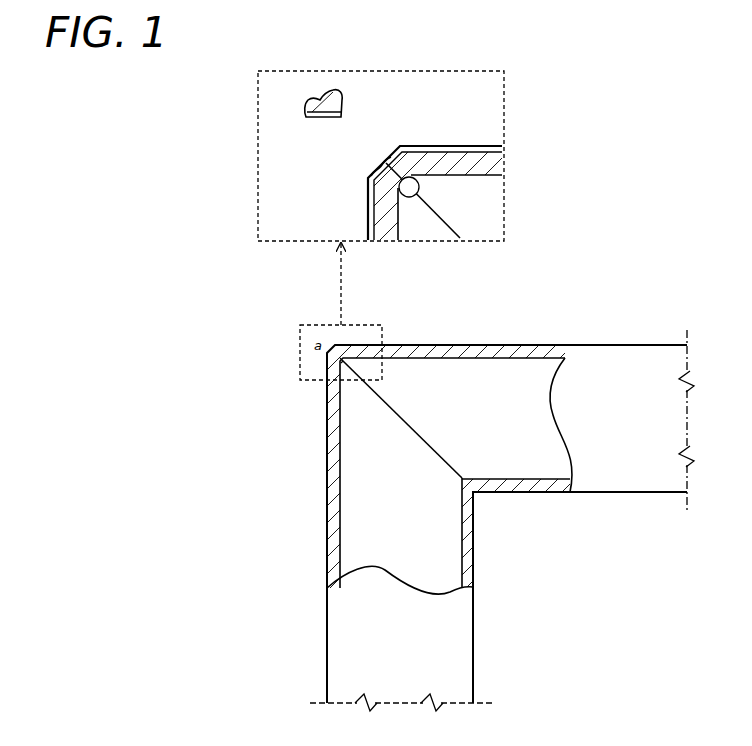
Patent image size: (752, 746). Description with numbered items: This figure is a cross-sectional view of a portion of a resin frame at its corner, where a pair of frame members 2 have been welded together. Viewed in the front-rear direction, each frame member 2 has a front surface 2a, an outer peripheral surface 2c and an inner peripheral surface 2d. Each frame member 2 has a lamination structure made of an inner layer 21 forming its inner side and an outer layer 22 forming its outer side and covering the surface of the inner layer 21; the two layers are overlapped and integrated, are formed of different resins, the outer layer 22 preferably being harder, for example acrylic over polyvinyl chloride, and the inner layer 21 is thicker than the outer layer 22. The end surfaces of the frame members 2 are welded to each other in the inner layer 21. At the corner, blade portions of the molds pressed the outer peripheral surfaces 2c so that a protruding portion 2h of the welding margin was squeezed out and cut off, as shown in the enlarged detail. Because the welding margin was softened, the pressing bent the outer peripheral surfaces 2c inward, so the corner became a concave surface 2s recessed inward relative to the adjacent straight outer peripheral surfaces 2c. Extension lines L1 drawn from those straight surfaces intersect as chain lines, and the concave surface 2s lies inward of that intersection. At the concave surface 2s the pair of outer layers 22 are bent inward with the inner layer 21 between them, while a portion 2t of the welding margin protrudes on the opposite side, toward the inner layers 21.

The frame member 2 is at (540, 344).
The front surface 2a is at (622, 370).
The outer peripheral surface 2c is at (472, 344).
The inner peripheral surface 2d is at (538, 493).
The protruding portion of the welding margin 2h is at (333, 88).
The concave surface 2s is at (376, 165).
The portion of the welding margin 2t is at (420, 185).
The inner layer 21 is at (505, 168).
The outer layer 22 is at (505, 148).
The extension line L1 is at (369, 258).